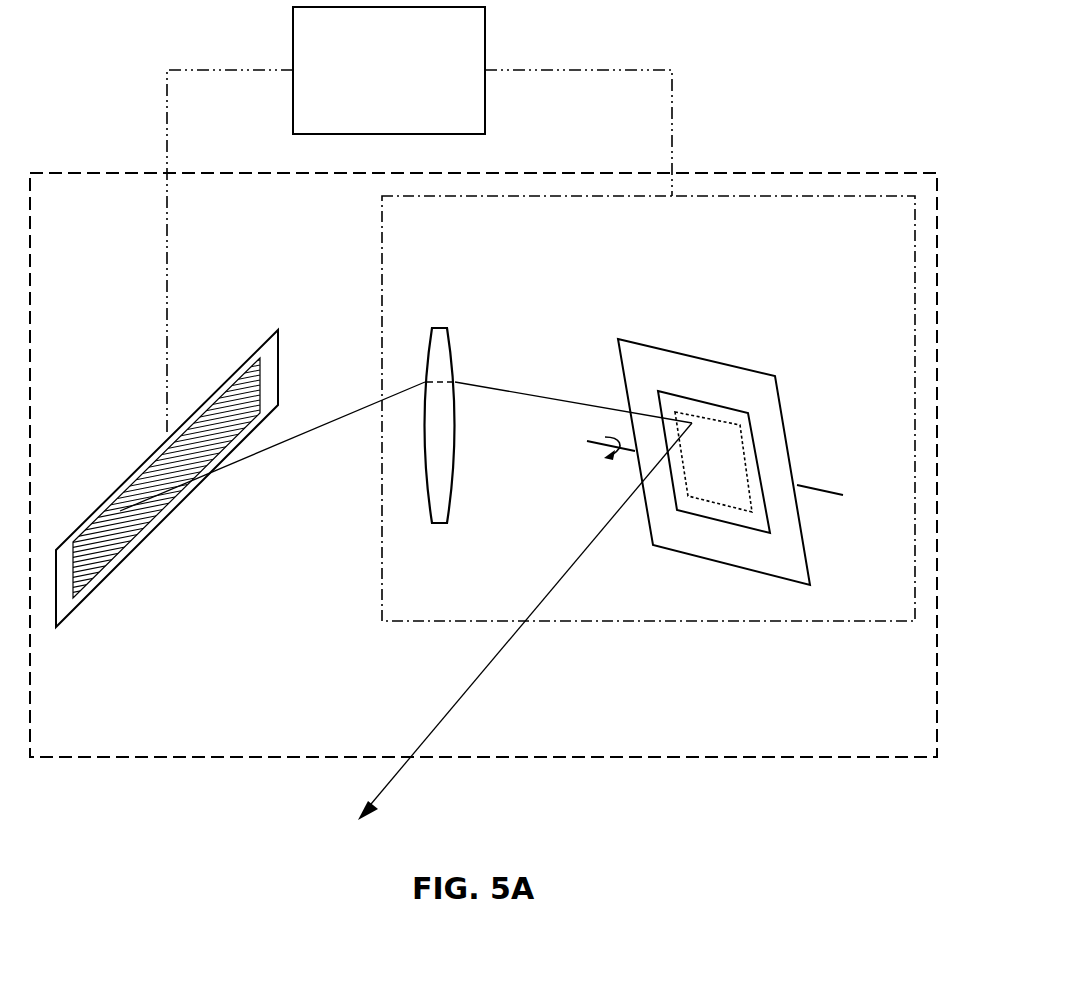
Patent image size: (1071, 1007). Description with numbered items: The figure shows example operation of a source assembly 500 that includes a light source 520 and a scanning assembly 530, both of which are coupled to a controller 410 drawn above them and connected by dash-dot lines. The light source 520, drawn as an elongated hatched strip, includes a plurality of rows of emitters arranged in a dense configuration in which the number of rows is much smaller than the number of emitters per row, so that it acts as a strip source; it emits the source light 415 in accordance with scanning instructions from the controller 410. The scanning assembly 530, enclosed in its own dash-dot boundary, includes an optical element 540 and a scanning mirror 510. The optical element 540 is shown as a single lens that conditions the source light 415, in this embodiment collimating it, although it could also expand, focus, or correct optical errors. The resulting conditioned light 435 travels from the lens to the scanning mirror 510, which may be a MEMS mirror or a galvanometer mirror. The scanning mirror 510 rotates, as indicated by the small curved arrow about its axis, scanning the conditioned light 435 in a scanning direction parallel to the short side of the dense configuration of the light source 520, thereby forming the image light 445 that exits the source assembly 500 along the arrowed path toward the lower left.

The controller 410 is at (371, 95).
The source light 415 is at (335, 423).
The conditioned light 435 is at (532, 405).
The image light 445 is at (433, 732).
The source assembly 500 is at (763, 757).
The scanning mirror 510 is at (775, 376).
The light source 520 is at (75, 612).
The scanning assembly 530 is at (855, 197).
The optical element 540 is at (447, 331).